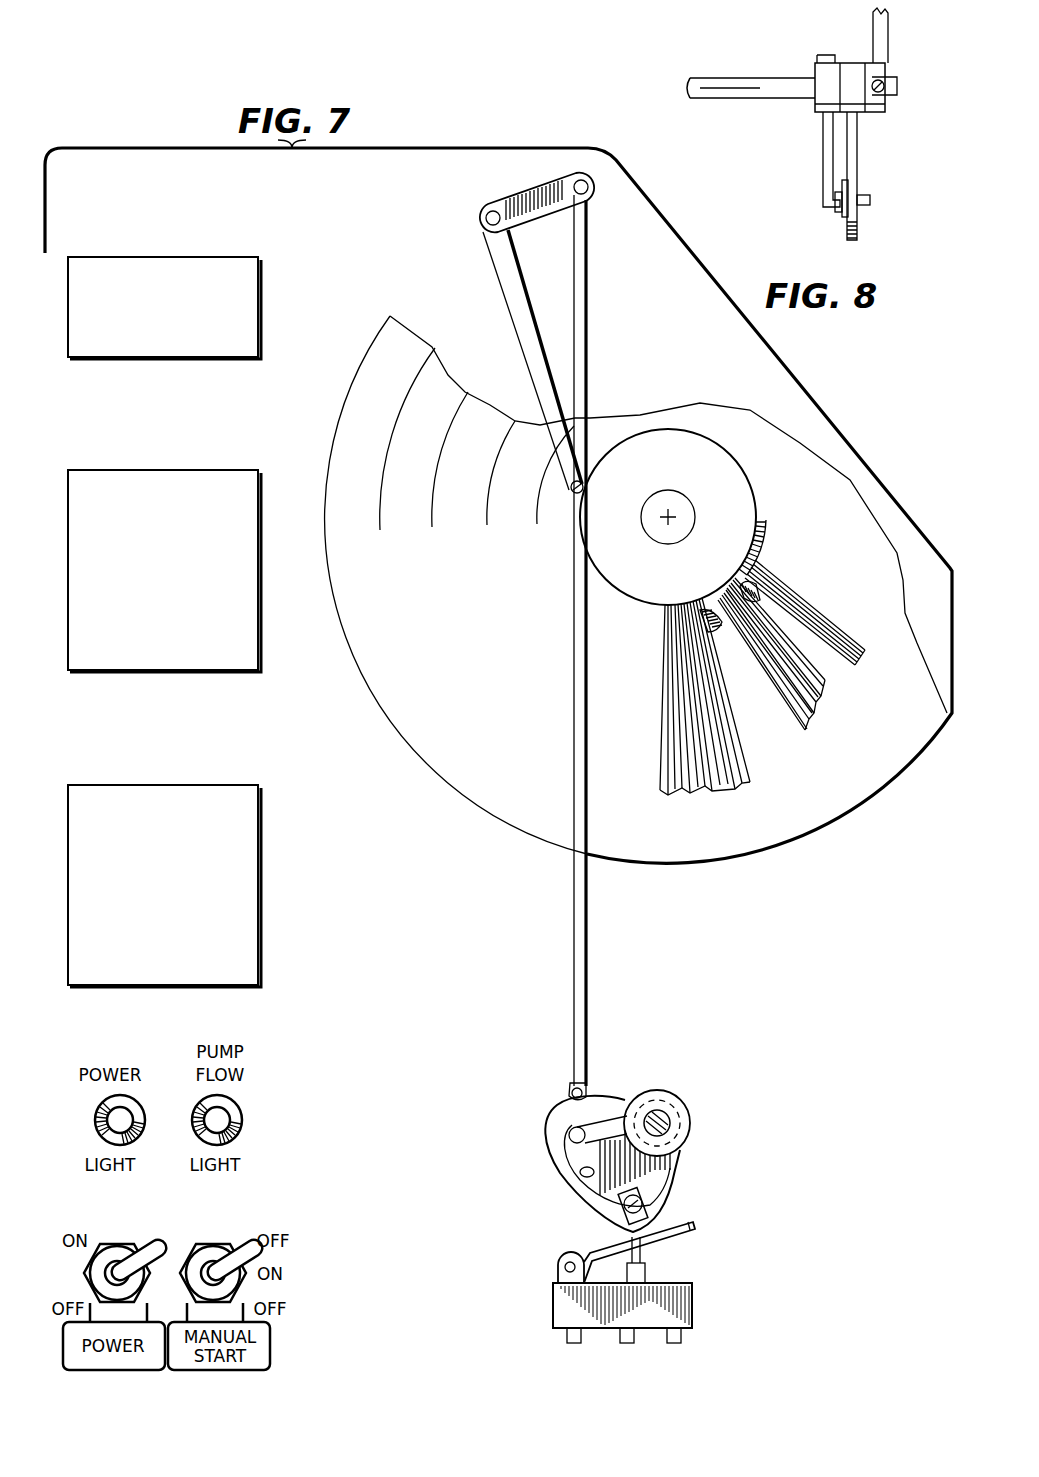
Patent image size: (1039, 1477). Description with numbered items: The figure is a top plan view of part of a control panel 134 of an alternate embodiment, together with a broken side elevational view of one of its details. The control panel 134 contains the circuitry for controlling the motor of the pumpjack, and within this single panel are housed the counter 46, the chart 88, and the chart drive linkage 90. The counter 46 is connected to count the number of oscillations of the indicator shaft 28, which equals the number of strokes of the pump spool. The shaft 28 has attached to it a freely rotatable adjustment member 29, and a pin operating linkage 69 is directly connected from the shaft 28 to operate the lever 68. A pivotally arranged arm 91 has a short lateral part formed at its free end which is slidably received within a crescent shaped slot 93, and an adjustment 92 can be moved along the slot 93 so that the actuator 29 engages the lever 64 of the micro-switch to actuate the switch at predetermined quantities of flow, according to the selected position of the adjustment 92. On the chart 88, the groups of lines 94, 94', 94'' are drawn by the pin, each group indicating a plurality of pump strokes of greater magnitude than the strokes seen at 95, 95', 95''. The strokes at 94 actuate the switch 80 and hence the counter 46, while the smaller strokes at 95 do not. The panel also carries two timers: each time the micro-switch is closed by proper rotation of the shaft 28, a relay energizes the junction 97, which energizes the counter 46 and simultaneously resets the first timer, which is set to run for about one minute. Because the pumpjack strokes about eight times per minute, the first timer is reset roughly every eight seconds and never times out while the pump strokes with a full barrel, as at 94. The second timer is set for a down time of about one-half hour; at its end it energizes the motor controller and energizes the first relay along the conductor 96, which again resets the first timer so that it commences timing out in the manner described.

In FIG. 7, the control panel 134 is at (377, 893).
In FIG. 7, the counter 46 is at (224, 257).
In FIG. 7, the conductor 96 is at (192, 452).
In FIG. 7, the junction 97 is at (185, 777).
In FIG. 7, the chart 88 is at (523, 792).
In FIG. 7, the chart drive linkage 90 is at (599, 222).
In FIG. 7, the lever 68 is at (587, 985).
In FIG. 7, the pin operating linkage 69 is at (598, 1092).
In FIG. 8, the pin operating linkage 69 is at (889, 35).
In FIG. 7, the indicator shaft 28 is at (660, 1122).
In FIG. 8, the indicator shaft 28 is at (748, 76).
In FIG. 7, the adjustment member 29 is at (677, 1172).
In FIG. 8, the adjustment member 29 is at (857, 160).
In FIG. 7, the pivotally arranged arm 91 is at (569, 1133).
In FIG. 8, the pivotally arranged arm 91 is at (823, 138).
In FIG. 7, the adjustment 92 is at (648, 1203).
In FIG. 8, the adjustment 92 is at (840, 214).
In FIG. 7, the crescent shaped slot 93 is at (580, 1170).
In FIG. 7, the lever of micro-switch 64 is at (680, 1232).
In FIG. 7, the switch 80 is at (697, 1347).
In FIG. 7, the group of lines 94 is at (686, 696).
In FIG. 7, the group of lines 94' is at (771, 675).
In FIG. 7, the group of lines 94'' is at (820, 631).
In FIG. 7, the pump strokes 95 is at (672, 629).
In FIG. 7, the pump strokes 95' is at (787, 585).
In FIG. 7, the pump strokes 95'' is at (783, 547).